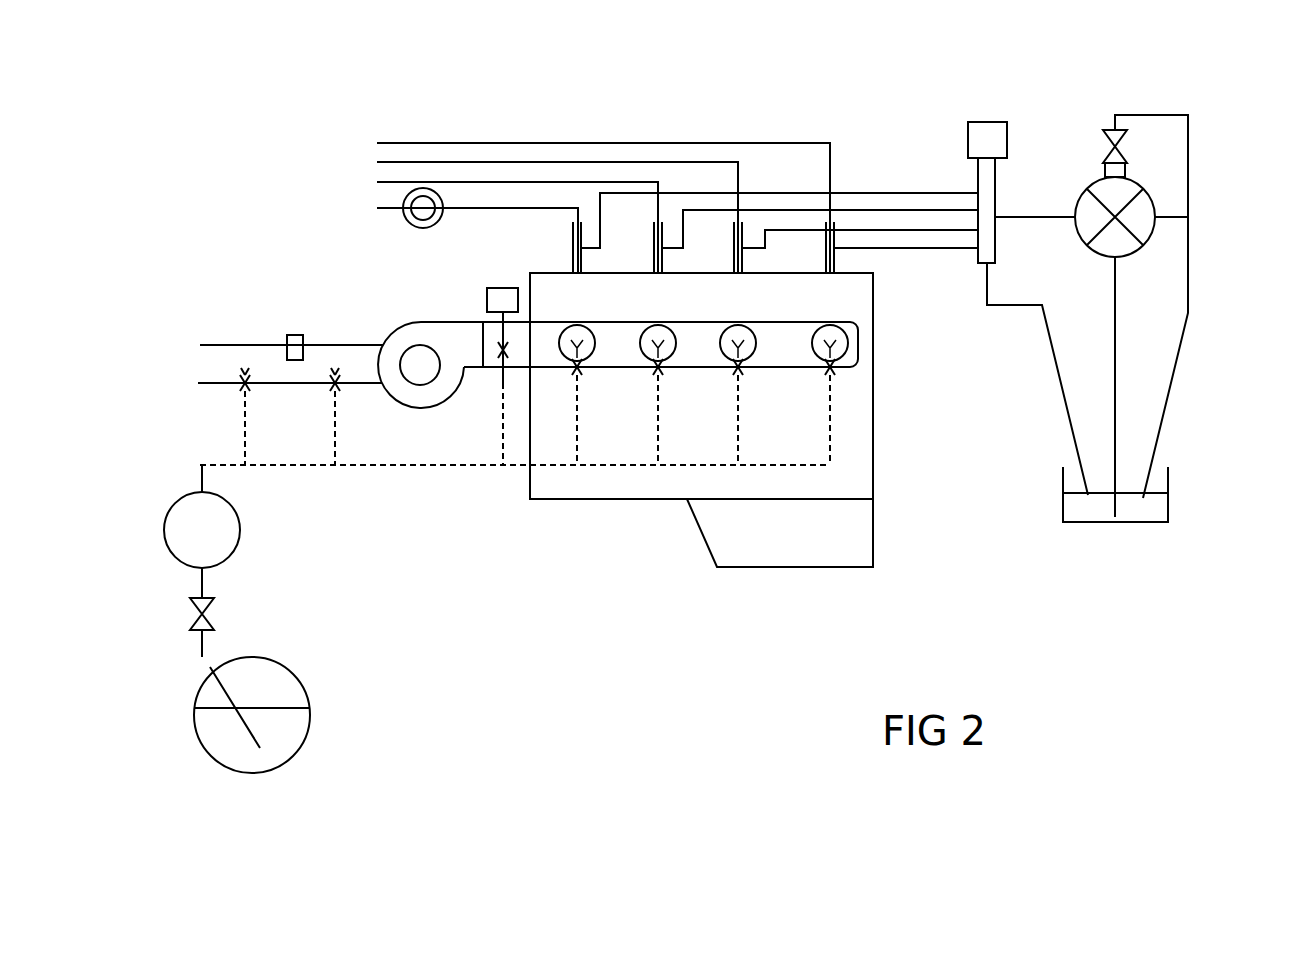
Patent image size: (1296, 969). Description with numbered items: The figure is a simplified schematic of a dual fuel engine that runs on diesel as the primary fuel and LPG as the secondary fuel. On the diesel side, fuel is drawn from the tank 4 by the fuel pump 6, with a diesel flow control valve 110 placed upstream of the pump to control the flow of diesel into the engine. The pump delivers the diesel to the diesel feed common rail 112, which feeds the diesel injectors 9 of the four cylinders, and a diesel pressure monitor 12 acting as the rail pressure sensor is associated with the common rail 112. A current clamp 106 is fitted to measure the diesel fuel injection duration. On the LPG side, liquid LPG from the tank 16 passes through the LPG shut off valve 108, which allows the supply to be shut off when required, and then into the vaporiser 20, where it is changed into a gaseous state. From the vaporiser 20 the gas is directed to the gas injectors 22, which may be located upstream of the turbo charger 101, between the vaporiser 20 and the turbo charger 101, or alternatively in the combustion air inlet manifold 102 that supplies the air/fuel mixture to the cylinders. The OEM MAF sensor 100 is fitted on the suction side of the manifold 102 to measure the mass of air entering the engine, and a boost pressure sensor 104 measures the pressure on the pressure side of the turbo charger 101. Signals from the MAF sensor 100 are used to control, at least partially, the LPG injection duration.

The tank 4 is at (1180, 528).
The fuel pump 6 is at (1160, 216).
The diesel injectors 9 is at (648, 285).
The diesel pressure monitor 12 is at (1009, 113).
The tank 16 is at (309, 686).
The vaporiser 20 is at (232, 528).
The gas injectors 22 is at (241, 390).
The OEM MAF sensor 100 is at (295, 328).
The turbo charger 101 is at (405, 318).
The combustion air inlet manifold 102 is at (870, 335).
The boost pressure sensor 104 is at (498, 284).
The current clamp 106 is at (403, 212).
The LPG shut off valve 108 is at (190, 624).
The diesel flow control valve 110 is at (1096, 135).
The diesel feed common rail 112 is at (970, 175).